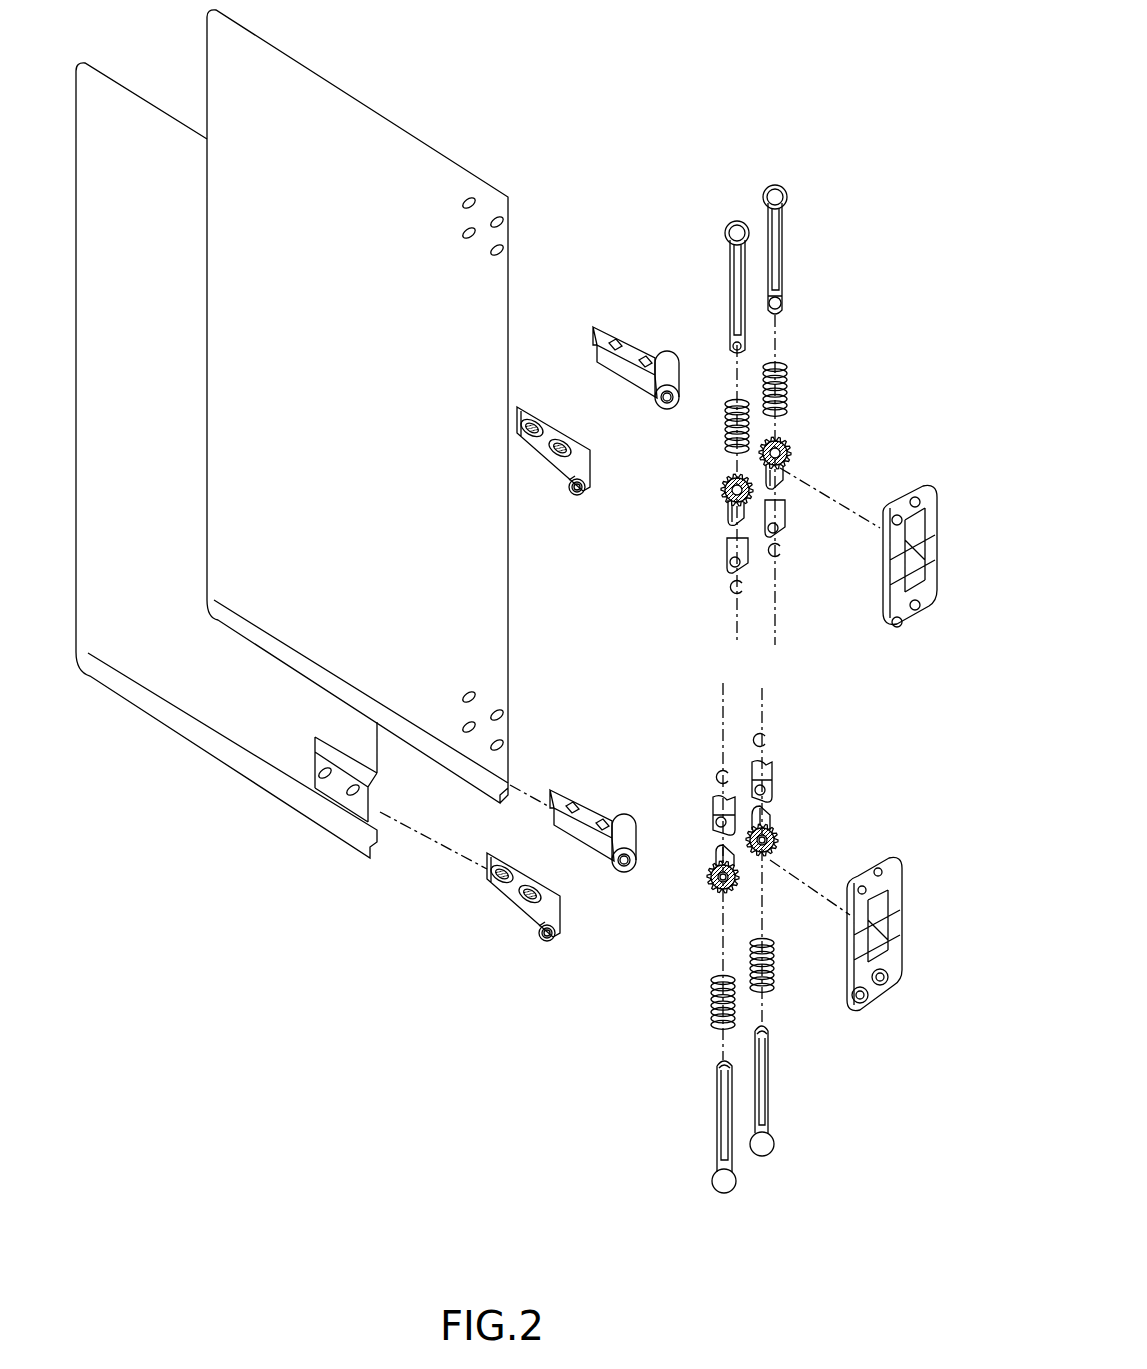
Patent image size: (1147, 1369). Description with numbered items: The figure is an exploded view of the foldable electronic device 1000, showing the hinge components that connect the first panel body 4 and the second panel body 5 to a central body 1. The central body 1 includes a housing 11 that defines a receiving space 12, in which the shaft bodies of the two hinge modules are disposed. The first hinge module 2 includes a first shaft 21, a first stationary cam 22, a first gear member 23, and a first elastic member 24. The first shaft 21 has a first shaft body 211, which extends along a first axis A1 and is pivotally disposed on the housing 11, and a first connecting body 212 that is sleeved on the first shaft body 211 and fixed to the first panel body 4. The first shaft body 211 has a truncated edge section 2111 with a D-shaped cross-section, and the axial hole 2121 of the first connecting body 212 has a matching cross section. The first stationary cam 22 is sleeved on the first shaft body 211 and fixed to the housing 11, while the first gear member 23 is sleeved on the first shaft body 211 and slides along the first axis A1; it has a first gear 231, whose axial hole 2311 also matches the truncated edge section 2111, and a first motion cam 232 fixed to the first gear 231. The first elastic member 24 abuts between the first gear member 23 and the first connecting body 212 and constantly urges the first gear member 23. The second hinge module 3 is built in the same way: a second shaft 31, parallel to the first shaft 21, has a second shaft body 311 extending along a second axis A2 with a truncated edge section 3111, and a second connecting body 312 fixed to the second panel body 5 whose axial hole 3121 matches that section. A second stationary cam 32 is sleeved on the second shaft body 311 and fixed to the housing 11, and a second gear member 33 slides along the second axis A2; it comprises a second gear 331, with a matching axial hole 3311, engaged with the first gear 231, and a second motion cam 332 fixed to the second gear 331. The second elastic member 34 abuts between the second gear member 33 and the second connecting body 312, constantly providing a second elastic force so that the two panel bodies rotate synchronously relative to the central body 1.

The foldable electronic device 1000 is at (662, 60).
The central body 1 is at (823, 580).
The housing 11 is at (888, 628).
The receiving space 12 is at (890, 590).
The first hinge module 2 is at (778, 166).
The first shaft 21 is at (804, 196).
The first shaft body 211 is at (783, 300).
The truncated edge section 2111 is at (783, 231).
The first connecting body 212 is at (603, 330).
The axial hole 2121 is at (667, 410).
The first stationary cam 22 is at (790, 520).
The first gear member 23 is at (860, 415).
The first gear 231 is at (792, 446).
The axial hole 2311 is at (769, 862).
The first motion cam 232 is at (790, 470).
The first elastic member 24 is at (789, 385).
The second hinge module 3 is at (731, 178).
The second shaft 31 is at (711, 209).
The second shaft body 311 is at (726, 236).
The truncated edge section 3111 is at (734, 281).
The second connecting body 312 is at (551, 422).
The axial hole 3121 is at (582, 497).
The second stationary cam 32 is at (725, 555).
The second gear member 33 is at (653, 475).
The second gear 331 is at (722, 487).
The axial hole 3311 is at (722, 890).
The second motion cam 332 is at (728, 510).
The second elastic member 34 is at (727, 422).
The first panel body 4 is at (368, 119).
The second panel body 5 is at (142, 117).
The first axis A1 is at (778, 348).
The second axis A2 is at (736, 368).